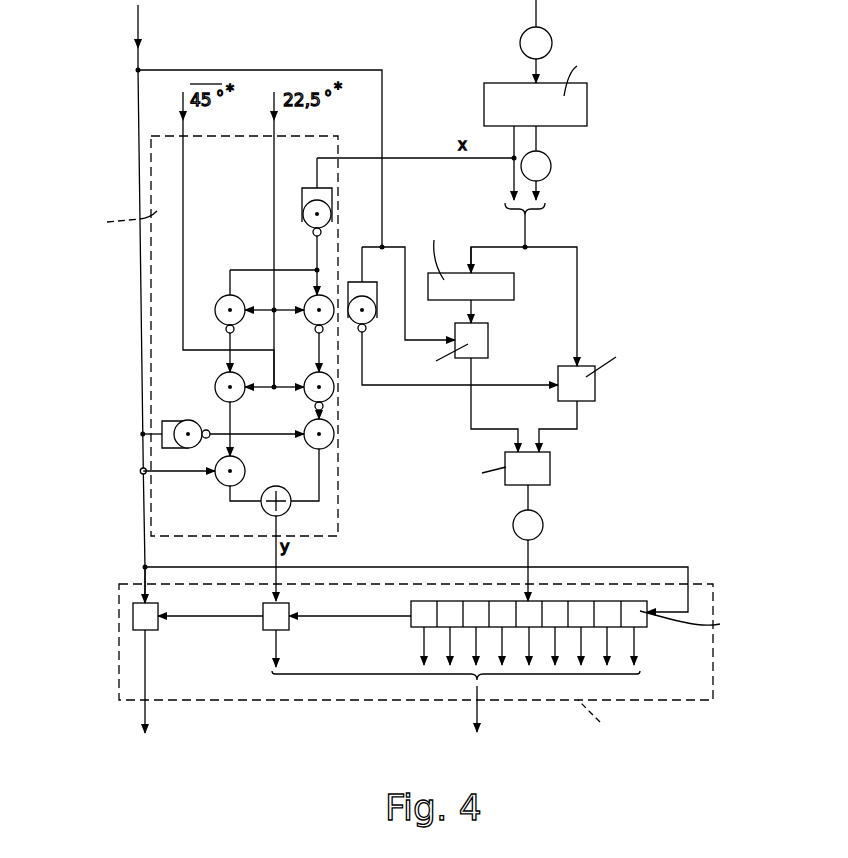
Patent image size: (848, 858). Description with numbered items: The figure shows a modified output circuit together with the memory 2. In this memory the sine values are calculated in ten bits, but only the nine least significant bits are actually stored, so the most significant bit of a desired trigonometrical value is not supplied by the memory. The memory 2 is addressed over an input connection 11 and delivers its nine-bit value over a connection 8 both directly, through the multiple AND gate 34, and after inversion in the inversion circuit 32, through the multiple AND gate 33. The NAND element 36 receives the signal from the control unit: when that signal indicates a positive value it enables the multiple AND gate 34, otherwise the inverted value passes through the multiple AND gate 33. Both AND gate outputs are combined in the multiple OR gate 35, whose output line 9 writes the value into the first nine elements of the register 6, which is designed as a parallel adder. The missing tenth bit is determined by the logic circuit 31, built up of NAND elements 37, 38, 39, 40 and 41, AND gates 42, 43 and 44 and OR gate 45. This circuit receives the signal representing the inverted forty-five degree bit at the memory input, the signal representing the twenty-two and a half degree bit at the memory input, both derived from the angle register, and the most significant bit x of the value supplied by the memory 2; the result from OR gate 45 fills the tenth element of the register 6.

The memory 2 is at (578, 107).
The register 6 is at (701, 692).
The memory output line 8 is at (536, 163).
The OR gate output line 9 is at (528, 555).
The memory input line 11 is at (536, 41).
The logic circuit 31 is at (176, 164).
The inversion circuit 32 is at (509, 285).
The multiple AND gate 33 is at (482, 341).
The multiple AND gate 34 is at (590, 385).
The multiple OR gate 35 is at (544, 469).
The NAND element 36 is at (367, 317).
The NAND element 37 is at (308, 219).
The NAND element 38 is at (312, 317).
The NAND element 39 is at (236, 316).
The NAND element 40 is at (311, 394).
The NAND element 41 is at (200, 421).
The AND gate 42 is at (239, 394).
The AND gate 43 is at (311, 443).
The AND gate 44 is at (242, 467).
The OR gate 45 is at (284, 509).